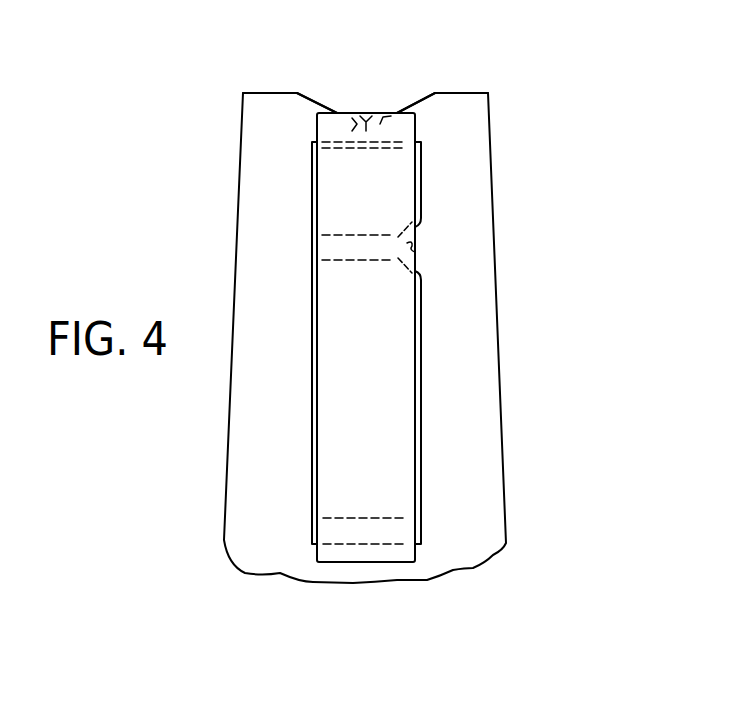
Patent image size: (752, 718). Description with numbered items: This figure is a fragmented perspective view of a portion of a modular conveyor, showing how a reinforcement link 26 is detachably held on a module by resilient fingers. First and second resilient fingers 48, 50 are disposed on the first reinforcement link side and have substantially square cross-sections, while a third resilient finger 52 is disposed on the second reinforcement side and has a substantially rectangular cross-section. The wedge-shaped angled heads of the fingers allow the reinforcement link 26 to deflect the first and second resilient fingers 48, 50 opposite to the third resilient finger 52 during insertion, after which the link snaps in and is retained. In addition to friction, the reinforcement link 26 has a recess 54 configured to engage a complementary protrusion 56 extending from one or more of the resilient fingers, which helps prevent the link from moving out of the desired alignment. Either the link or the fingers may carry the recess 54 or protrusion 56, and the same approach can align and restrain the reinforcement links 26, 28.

The reinforcement link 26 is at (378, 77).
The reinforcement link 28 is at (370, 112).
The first resilient finger 48 is at (434, 338).
The second resilient finger 50 is at (477, 352).
The third resilient finger 52 is at (280, 129).
The recess 54 is at (343, 260).
The protrusion 56 is at (417, 243).